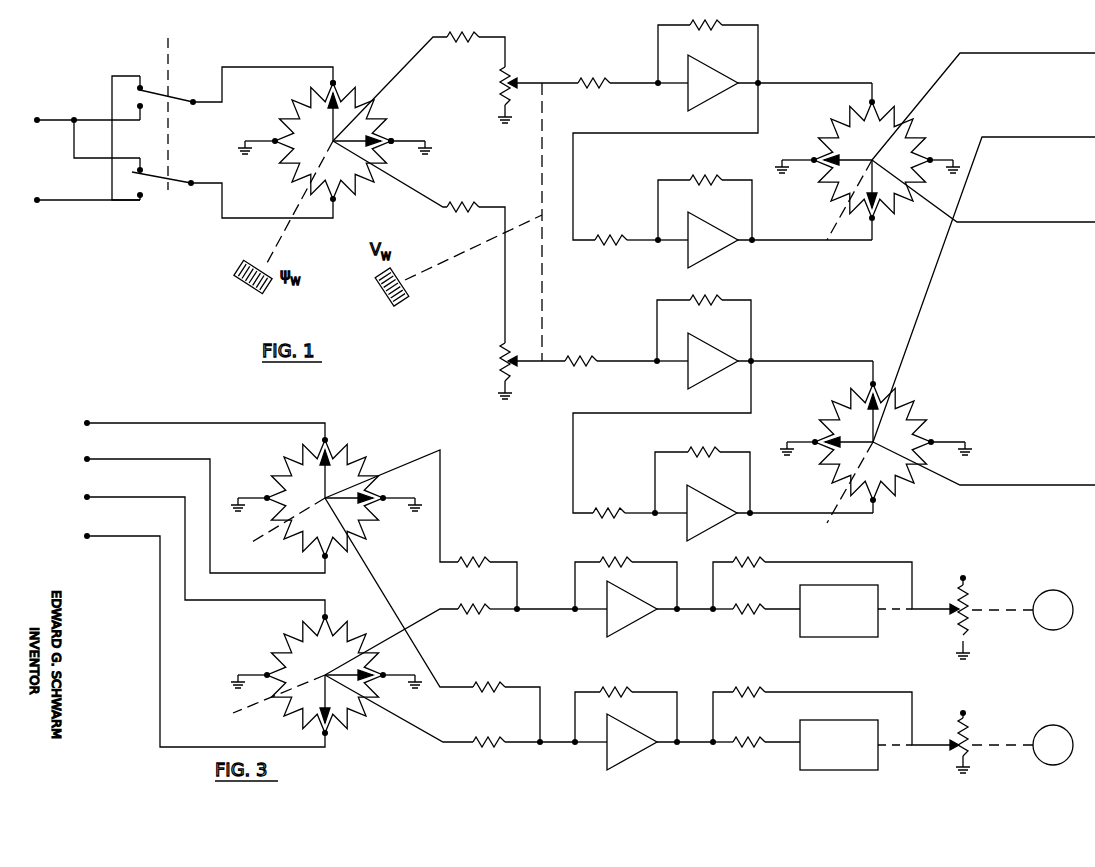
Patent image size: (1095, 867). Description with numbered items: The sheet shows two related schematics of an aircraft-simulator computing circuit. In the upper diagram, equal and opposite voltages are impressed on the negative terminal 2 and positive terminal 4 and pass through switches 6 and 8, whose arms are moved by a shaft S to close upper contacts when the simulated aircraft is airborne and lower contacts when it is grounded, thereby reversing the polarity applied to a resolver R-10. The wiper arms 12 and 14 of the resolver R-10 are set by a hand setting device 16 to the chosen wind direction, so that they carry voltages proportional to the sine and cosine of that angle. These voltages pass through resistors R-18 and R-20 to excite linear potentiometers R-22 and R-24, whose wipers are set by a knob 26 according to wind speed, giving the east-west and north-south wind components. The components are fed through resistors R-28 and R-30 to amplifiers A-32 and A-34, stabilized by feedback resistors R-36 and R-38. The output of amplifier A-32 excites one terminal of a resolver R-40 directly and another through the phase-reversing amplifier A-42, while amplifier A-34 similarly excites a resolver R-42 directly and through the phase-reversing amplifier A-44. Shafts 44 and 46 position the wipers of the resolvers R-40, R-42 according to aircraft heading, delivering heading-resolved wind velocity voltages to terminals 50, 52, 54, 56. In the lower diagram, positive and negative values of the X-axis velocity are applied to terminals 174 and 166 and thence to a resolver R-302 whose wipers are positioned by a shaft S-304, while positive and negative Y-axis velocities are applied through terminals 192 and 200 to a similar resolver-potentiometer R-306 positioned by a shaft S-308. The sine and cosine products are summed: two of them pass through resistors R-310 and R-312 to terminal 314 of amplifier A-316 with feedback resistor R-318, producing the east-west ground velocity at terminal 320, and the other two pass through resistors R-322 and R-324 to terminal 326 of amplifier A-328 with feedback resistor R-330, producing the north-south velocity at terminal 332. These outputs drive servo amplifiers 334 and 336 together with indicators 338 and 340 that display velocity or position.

In FIG. 1, the negative input terminal 2 is at (38, 119).
In FIG. 1, the positive input terminal 4 is at (40, 203).
In FIG. 1, the switch 6 is at (144, 99).
In FIG. 1, the switch 8 is at (146, 187).
In FIG. 1, the shaft S is at (173, 61).
In FIG. 1, the wiper arm 12 is at (322, 96).
In FIG. 1, the wiper arm 14 is at (378, 132).
In FIG. 1, the hand setting device 16 is at (237, 284).
In FIG. 1, the knob 26 is at (404, 306).
In FIG. 1, the resolver R-10 is at (343, 88).
In FIG. 1, the resistor R-18 is at (444, 36).
In FIG. 1, the resistor R-20 is at (444, 204).
In FIG. 1, the linear potentiometer R-22 is at (501, 74).
In FIG. 1, the linear potentiometer R-24 is at (514, 375).
In FIG. 1, the resistor R-28 is at (578, 82).
In FIG. 1, the resistor R-30 is at (572, 359).
In FIG. 1, the stabilizing feedback resistor R-36 is at (694, 24).
In FIG. 1, the stabilizing feedback resistor R-38 is at (693, 300).
In FIG. 1, the amplifier A-32 is at (684, 97).
In FIG. 1, the amplifier A-34 is at (684, 369).
In FIG. 1, the phase-reversing amplifier A-42 is at (684, 246).
In FIG. 1, the phase-reversing amplifier A-44 is at (684, 521).
In FIG. 1, the resolver R-40 is at (879, 102).
In FIG. 1, the resolver R-42 is at (906, 398).
In FIG. 1, the shaft 44 is at (826, 258).
In FIG. 1, the shaft 46 is at (826, 523).
In FIG. 1, the output terminal 50 is at (1075, 66).
In FIG. 1, the output terminal 52 is at (1075, 147).
In FIG. 1, the output terminal 54 is at (1075, 228).
In FIG. 1, the output terminal 56 is at (1075, 496).
In FIG. 3, the input terminal 166 is at (82, 426).
In FIG. 3, the input terminal 174 is at (82, 462).
In FIG. 3, the input terminal 192 is at (82, 500).
In FIG. 3, the input terminal 200 is at (82, 539).
In FIG. 3, the resolver R-302 is at (342, 451).
In FIG. 3, the shaft S-304 is at (259, 546).
In FIG. 3, the resolver-potentiometer R-306 is at (334, 743).
In FIG. 3, the shaft S-308 is at (255, 723).
In FIG. 3, the resistor R-310 is at (463, 567).
In FIG. 3, the resistor R-312 is at (463, 613).
In FIG. 3, the resistor R-322 is at (479, 692).
In FIG. 3, the resistor R-324 is at (479, 751).
In FIG. 3, the input terminal 314 is at (572, 608).
In FIG. 3, the amplifier A-316 is at (604, 618).
In FIG. 3, the feedback resistor R-318 is at (630, 557).
In FIG. 3, the output terminal 320 is at (713, 612).
In FIG. 3, the input terminal 326 is at (571, 746).
In FIG. 3, the summing amplifier A-328 is at (631, 758).
In FIG. 3, the feedback resistor R-330 is at (601, 690).
In FIG. 3, the output terminal 332 is at (713, 746).
In FIG. 3, the servo amplifier 334 is at (819, 591).
In FIG. 3, the servo amplifier 336 is at (819, 726).
In FIG. 3, the indicator 338 is at (1058, 593).
In FIG. 3, the indicator 340 is at (1058, 728).